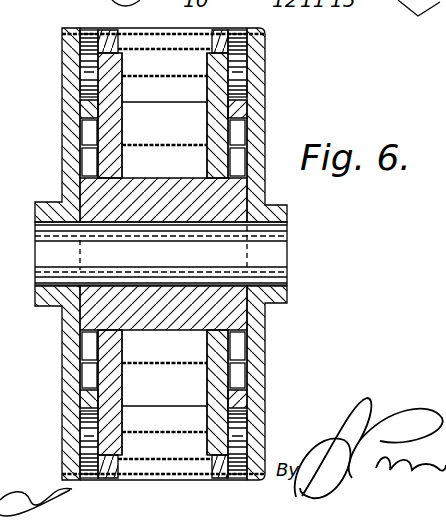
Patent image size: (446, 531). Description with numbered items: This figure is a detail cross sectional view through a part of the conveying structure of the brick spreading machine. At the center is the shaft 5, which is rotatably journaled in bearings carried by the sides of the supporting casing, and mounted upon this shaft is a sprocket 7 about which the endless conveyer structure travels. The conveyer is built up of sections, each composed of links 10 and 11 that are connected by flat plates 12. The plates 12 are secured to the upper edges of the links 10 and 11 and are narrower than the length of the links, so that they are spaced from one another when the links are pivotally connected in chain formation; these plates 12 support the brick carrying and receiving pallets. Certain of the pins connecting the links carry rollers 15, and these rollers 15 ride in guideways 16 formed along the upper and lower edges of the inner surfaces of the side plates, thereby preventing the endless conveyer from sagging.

The shaft 5 is at (265, 241).
The sprocket 7 is at (217, 202).
The link 10 is at (106, 72).
The link 11 is at (220, 63).
The flat plate 12 is at (149, 72).
The roller 15 is at (98, 93).
The guideway 16 is at (88, 110).